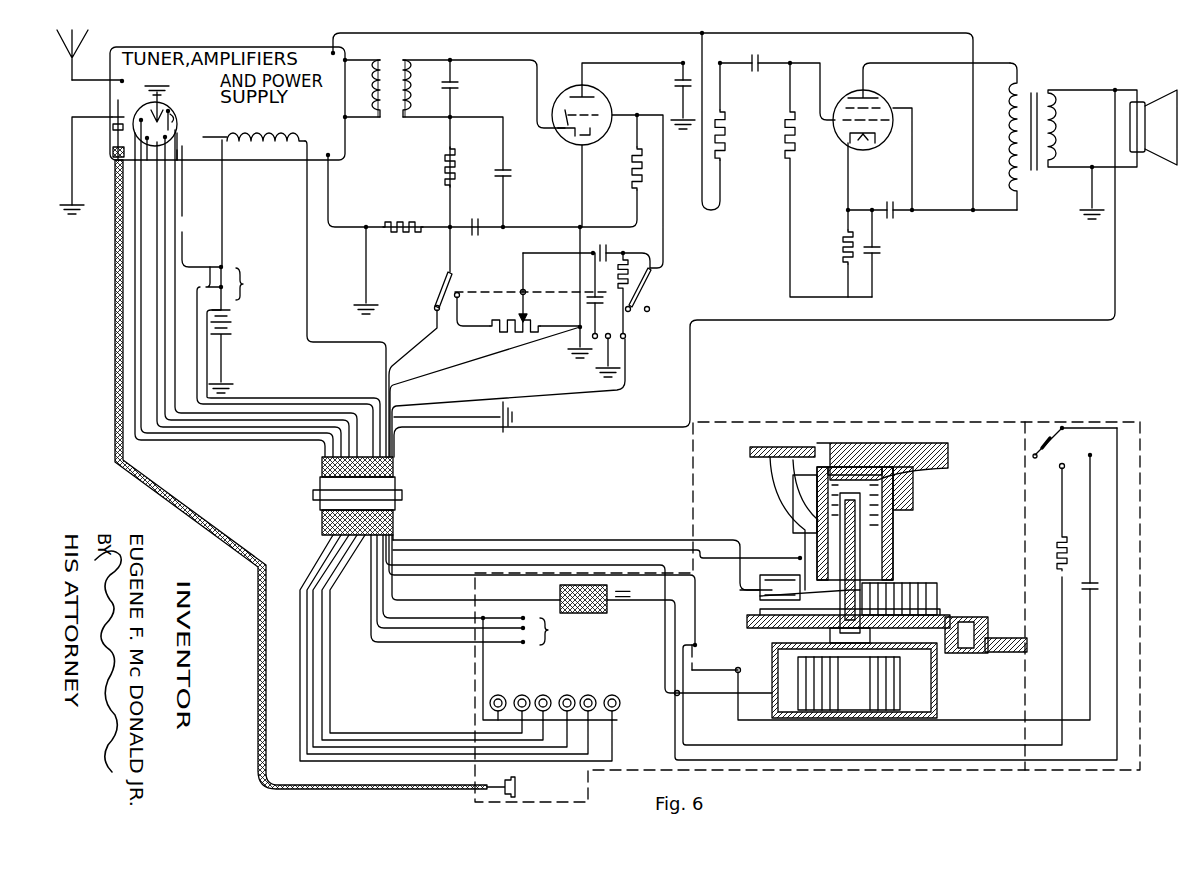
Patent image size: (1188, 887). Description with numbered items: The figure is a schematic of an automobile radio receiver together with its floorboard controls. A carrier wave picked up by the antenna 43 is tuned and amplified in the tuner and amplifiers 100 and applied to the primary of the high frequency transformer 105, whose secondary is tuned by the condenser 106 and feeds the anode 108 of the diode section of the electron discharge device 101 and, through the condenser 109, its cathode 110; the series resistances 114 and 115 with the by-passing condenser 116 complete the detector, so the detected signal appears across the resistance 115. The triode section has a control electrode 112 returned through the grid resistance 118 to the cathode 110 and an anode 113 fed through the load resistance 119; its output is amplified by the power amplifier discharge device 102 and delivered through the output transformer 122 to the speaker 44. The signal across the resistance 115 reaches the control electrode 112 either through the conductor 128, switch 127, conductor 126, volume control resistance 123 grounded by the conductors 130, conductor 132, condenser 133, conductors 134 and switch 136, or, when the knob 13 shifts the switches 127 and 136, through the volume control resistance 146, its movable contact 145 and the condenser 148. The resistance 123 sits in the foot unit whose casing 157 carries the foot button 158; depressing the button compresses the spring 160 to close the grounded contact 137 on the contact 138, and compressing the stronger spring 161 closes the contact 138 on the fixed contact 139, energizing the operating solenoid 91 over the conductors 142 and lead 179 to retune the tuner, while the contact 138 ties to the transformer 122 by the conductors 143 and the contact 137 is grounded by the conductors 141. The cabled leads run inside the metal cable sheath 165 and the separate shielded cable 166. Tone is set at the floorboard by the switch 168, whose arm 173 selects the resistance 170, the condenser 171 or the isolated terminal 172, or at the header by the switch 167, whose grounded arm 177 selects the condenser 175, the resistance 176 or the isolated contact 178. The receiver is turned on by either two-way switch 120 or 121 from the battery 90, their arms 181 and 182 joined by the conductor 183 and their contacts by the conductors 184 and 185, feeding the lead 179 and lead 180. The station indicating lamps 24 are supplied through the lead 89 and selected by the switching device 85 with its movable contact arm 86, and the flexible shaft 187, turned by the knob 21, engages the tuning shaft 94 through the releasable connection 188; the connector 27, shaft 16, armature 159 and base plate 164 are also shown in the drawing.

The control knob 13 is at (483, 292).
The shaft 16 is at (987, 654).
The control knob 21 is at (517, 780).
The station indicating lamps 24 is at (498, 697).
The multi-conductor connector plug 27 is at (322, 517).
The antenna 43 is at (85, 38).
The speaker 44 is at (1165, 98).
The switching device 85 is at (163, 100).
The movable contact arm 86 is at (175, 115).
The lead 89 is at (482, 690).
The battery 90 is at (231, 327).
The operating solenoid 91 is at (260, 130).
The shaft 94 is at (114, 103).
The tuner and amplifiers 100 is at (200, 47).
The electron discharge device 101 is at (605, 108).
The power amplifier discharge device 102 is at (868, 92).
The high frequency transformer 105 is at (421, 55).
The condenser 106 is at (460, 93).
The anode 108 is at (563, 137).
The condenser 109 is at (520, 174).
The cathode 110 is at (621, 165).
The control electrode 112 is at (558, 107).
The anode 113 is at (595, 88).
The resistance 114 is at (443, 163).
The resistance 115 is at (420, 220).
The high frequency by-passing condenser 116 is at (473, 222).
The grid resistance 118 is at (630, 180).
The load resistance 119 is at (727, 145).
The switch 120 is at (257, 284).
The switch 121 is at (563, 631).
The output transformer 122 is at (1075, 77).
The volume control resistance 123 is at (775, 720).
The conductor 126 is at (414, 350).
The switch 127 is at (443, 282).
The conductor 128 is at (450, 273).
The conductors 130 is at (465, 363).
The conductor 132 is at (738, 672).
The condenser 133 is at (702, 665).
The conductors 134 is at (537, 395).
The switch 136 is at (652, 298).
The switch contact 137 is at (800, 557).
The switch contact 138 is at (893, 580).
The switch contact 139 is at (760, 595).
The conductors 141 is at (448, 412).
The conductors 142 is at (307, 272).
The conductors 143 is at (910, 325).
The movable contact 145 is at (519, 310).
The volume control resistance 146 is at (503, 320).
The condenser 148 is at (597, 250).
The casing 157 is at (757, 583).
The foot button 158 is at (750, 458).
The armature 159 is at (905, 610).
The spring 160 is at (800, 515).
The spring 161 is at (887, 557).
The base plate 164 is at (900, 597).
The metal cable sheath 165 is at (396, 523).
The shielded cable 166 is at (582, 613).
The tone control switch 167 is at (630, 332).
The tone control switch 168 is at (1065, 445).
The resistance 170 is at (1055, 565).
The condenser 171 is at (1083, 583).
The third terminal 172 is at (1034, 457).
The movable arm 173 is at (1045, 440).
The tone control condenser 175 is at (587, 300).
The tone control resistance 176 is at (623, 260).
The arm 177 is at (613, 355).
The third contact 178 is at (630, 338).
The lead 179 is at (223, 200).
The lead 180 is at (207, 126).
The switch arm 181 is at (528, 644).
The switch arm 182 is at (229, 314).
The conductor 183 is at (210, 267).
The conductor 184 is at (413, 657).
The conductor 185 is at (236, 404).
The flexible shaft 187 is at (112, 148).
The releasable connection 188 is at (112, 128).